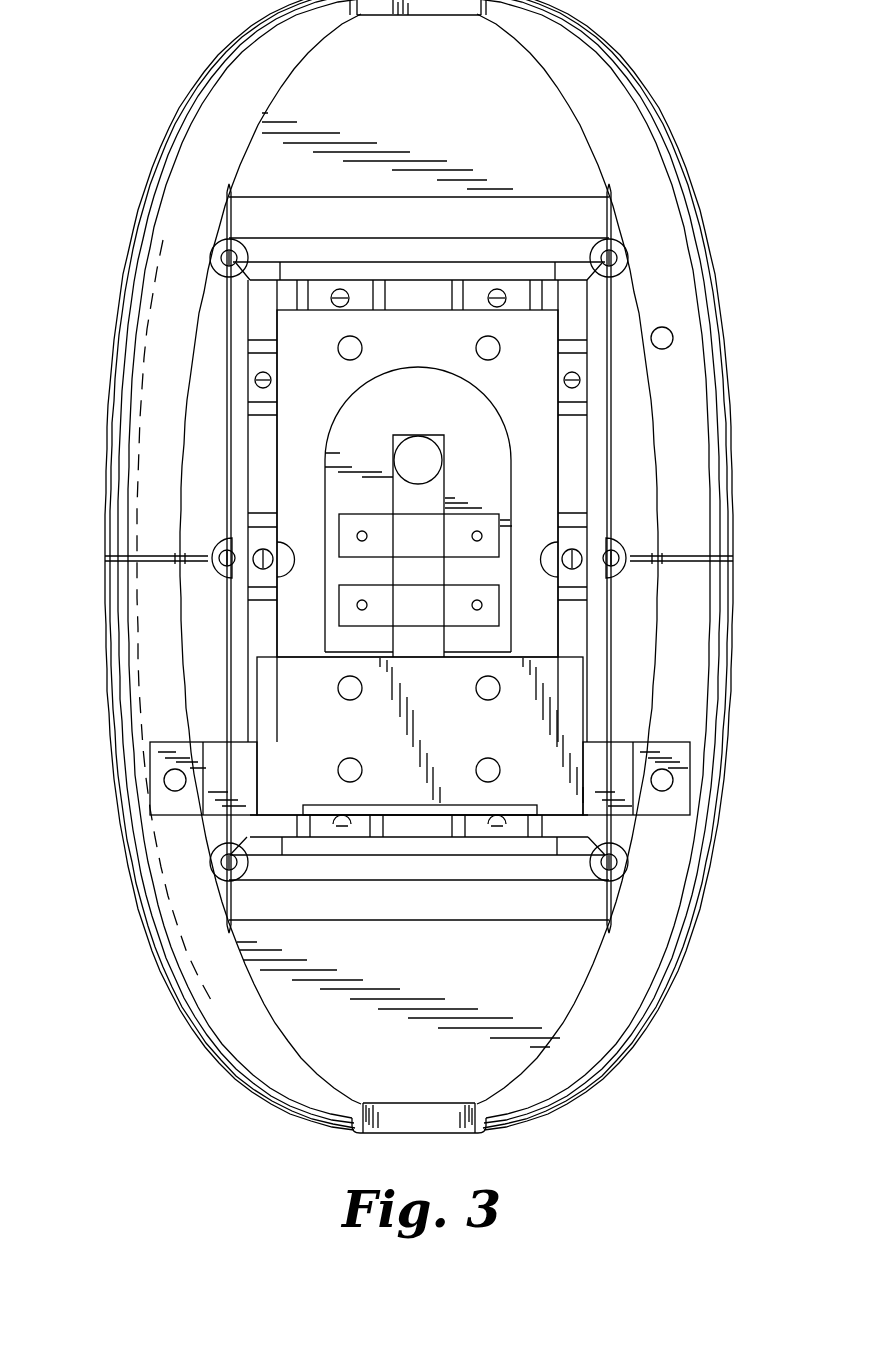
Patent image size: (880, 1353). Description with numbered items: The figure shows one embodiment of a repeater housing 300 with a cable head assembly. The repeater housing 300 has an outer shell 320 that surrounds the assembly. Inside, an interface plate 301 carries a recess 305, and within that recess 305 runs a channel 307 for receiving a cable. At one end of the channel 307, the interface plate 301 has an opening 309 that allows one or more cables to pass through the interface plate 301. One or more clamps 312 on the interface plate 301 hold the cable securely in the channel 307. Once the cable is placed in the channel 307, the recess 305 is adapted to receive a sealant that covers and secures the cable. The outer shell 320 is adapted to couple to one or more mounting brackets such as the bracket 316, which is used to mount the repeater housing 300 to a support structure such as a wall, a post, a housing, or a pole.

The repeater housing 300 is at (131, 1117).
The interface plate 301 is at (533, 345).
The recess 305 is at (488, 455).
The channel 307 is at (405, 638).
The opening 309 is at (392, 440).
The clamps 312 is at (500, 605).
The bracket 316 is at (617, 785).
The outer shell 320 is at (168, 297).